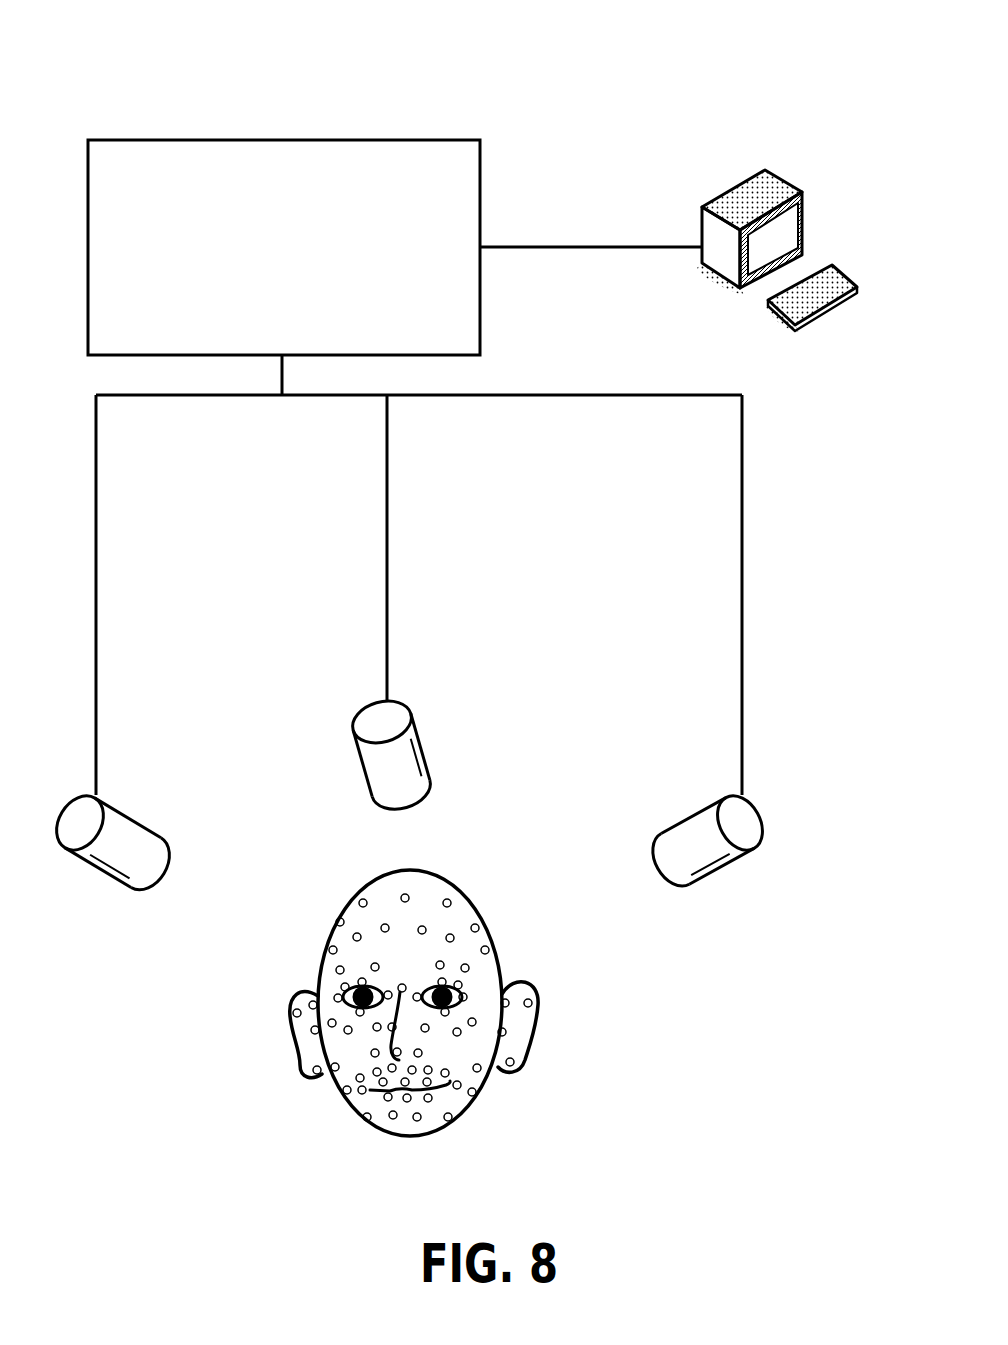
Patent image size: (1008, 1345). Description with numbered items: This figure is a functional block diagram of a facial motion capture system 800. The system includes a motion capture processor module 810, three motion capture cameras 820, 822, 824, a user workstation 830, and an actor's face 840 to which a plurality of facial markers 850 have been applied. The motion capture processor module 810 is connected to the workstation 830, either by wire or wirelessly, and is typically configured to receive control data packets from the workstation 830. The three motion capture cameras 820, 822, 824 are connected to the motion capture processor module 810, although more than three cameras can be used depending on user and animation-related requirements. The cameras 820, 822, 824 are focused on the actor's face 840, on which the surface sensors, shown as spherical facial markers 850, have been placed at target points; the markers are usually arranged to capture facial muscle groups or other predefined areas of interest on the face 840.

The facial motion capture system 800 is at (580, 57).
The motion capture processor module 810 is at (465, 178).
The motion capture camera 820 is at (145, 823).
The motion capture camera 822 is at (415, 718).
The motion capture camera 824 is at (698, 812).
The user workstation 830 is at (745, 176).
The actor's face 840 is at (352, 1108).
The facial markers 850 is at (452, 901).